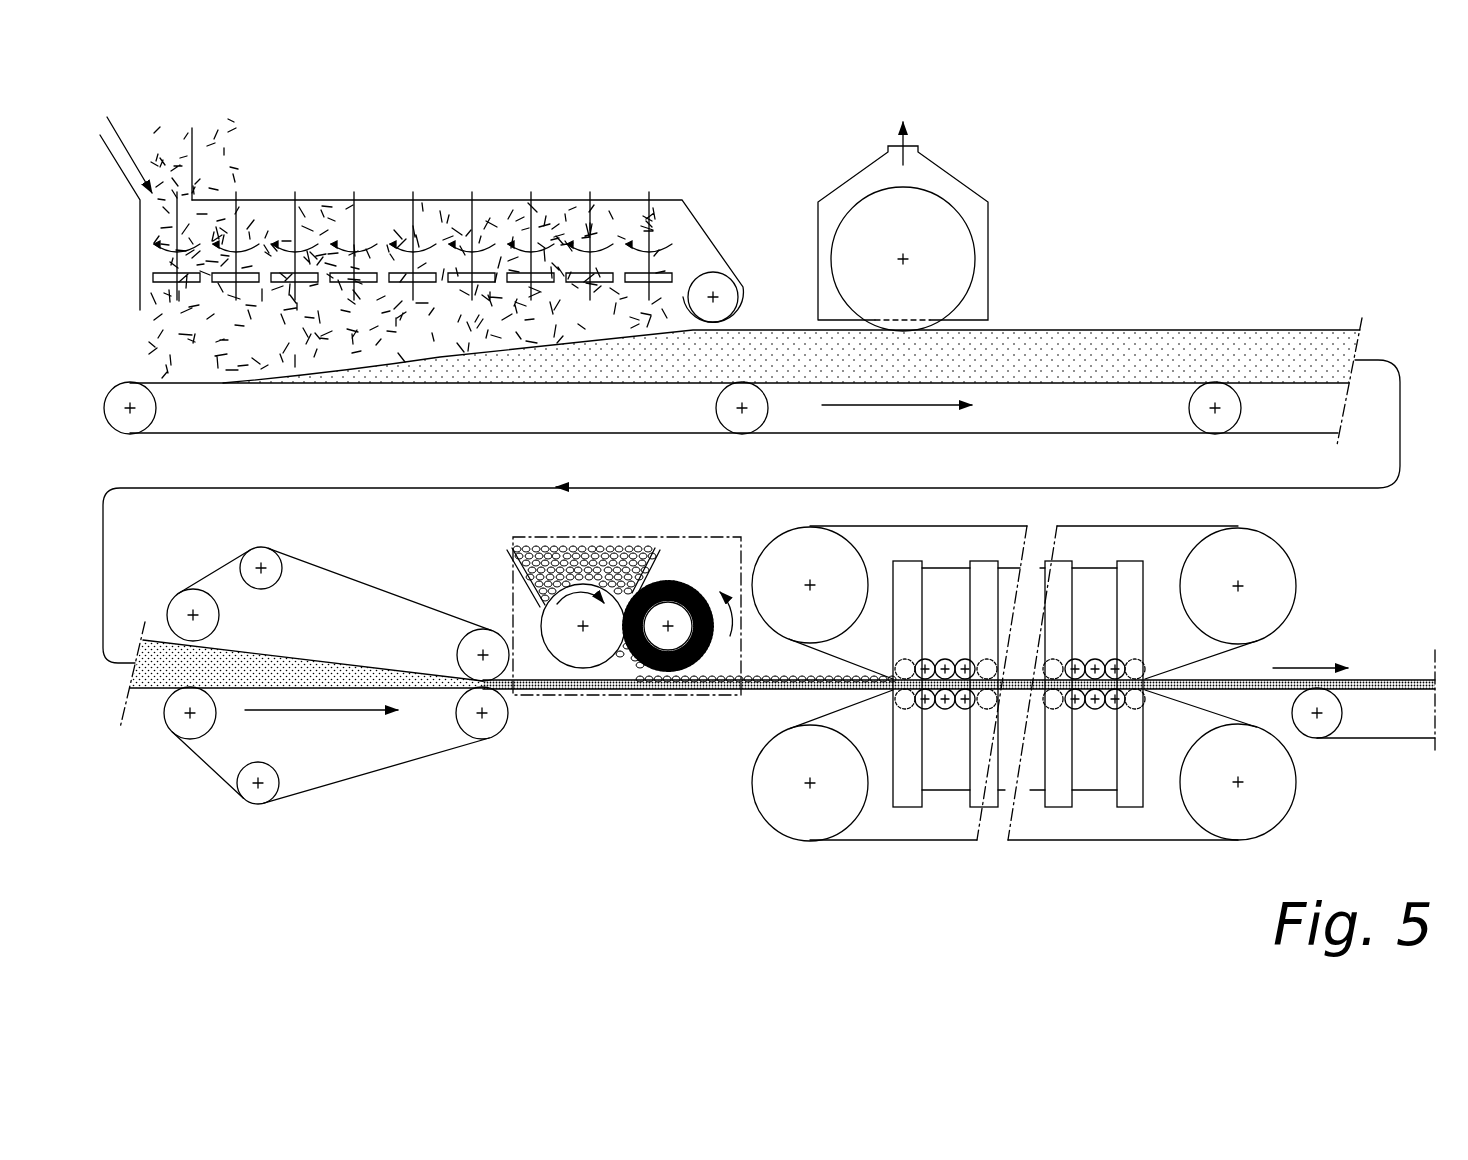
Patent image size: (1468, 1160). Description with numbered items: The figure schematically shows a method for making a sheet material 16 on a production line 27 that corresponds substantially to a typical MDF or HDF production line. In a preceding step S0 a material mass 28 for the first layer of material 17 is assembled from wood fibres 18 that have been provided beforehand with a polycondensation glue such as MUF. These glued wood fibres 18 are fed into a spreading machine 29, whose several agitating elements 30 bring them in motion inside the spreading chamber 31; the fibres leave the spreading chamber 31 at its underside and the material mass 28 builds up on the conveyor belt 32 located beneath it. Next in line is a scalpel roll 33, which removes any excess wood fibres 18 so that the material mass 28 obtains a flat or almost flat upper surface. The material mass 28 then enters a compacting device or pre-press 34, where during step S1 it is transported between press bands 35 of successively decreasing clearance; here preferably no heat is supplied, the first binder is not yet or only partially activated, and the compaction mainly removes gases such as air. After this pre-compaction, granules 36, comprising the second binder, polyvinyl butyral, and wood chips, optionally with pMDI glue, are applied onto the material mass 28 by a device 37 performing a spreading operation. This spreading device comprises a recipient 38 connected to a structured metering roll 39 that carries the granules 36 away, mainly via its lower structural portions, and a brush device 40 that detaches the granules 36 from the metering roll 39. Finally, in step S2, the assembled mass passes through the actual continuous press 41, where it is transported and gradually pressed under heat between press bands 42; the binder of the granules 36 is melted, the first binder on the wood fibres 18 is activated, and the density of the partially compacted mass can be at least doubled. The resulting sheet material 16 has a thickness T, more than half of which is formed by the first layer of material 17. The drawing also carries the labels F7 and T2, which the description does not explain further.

The sheet material 16 is at (1235, 677).
The first layer of material 17 is at (1357, 692).
The wood fibres 18 is at (195, 214).
The production line 27 is at (1174, 240).
The material mass 28 is at (748, 355).
The spreading machine 29 is at (487, 200).
The agitating elements 30 is at (253, 273).
The spreading chamber 31 is at (440, 300).
The conveyor belt 32 is at (448, 378).
The scalpel roll 33 is at (945, 230).
The pre-press 34 is at (222, 552).
The press bands 35 is at (212, 772).
The granules 36 is at (550, 560).
The device for applying granules 37 is at (678, 607).
The recipient 38 is at (513, 600).
The metering roll 39 is at (565, 655).
The detaching device 40 is at (678, 640).
The press 41 is at (756, 536).
The press bands 42 is at (930, 840).
The preceding step S0 is at (712, 202).
The pre-compaction step S1 is at (379, 574).
The hot pressing step S2 is at (1244, 567).
The process step F7 is at (638, 697).
The thickness T is at (1425, 730).
The layer thickness T2 is at (1380, 730).